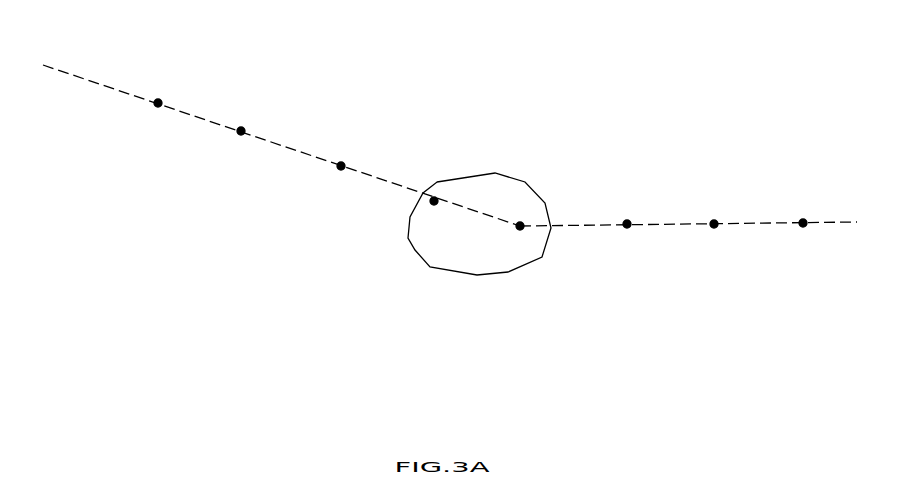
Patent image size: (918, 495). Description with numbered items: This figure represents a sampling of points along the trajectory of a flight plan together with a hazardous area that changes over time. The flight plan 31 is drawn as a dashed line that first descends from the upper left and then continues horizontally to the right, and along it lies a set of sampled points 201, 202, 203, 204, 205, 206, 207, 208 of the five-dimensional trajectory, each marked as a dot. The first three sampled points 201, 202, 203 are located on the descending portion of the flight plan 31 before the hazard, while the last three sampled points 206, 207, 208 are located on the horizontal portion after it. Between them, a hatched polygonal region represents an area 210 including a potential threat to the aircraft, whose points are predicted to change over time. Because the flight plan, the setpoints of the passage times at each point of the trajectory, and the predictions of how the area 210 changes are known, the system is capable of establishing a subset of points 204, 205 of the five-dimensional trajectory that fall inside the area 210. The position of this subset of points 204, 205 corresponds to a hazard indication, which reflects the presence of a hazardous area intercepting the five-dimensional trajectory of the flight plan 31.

The flight plan 31 is at (95, 80).
The sampled point 201 is at (167, 92).
The sampled point 202 is at (245, 126).
The sampled point 203 is at (346, 159).
The sampled point 204 is at (437, 181).
The sampled point 205 is at (520, 214).
The sampled point 206 is at (629, 209).
The sampled point 207 is at (713, 212).
The sampled point 208 is at (807, 212).
The area including a potential threat 210 is at (450, 262).